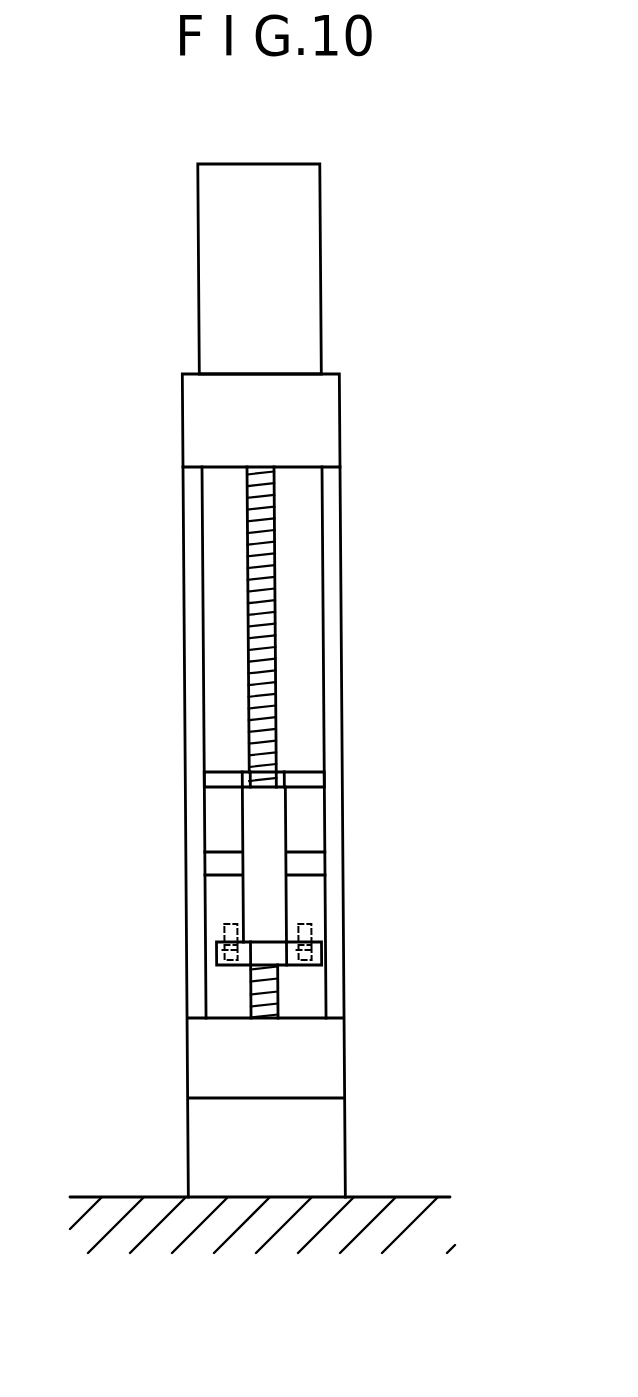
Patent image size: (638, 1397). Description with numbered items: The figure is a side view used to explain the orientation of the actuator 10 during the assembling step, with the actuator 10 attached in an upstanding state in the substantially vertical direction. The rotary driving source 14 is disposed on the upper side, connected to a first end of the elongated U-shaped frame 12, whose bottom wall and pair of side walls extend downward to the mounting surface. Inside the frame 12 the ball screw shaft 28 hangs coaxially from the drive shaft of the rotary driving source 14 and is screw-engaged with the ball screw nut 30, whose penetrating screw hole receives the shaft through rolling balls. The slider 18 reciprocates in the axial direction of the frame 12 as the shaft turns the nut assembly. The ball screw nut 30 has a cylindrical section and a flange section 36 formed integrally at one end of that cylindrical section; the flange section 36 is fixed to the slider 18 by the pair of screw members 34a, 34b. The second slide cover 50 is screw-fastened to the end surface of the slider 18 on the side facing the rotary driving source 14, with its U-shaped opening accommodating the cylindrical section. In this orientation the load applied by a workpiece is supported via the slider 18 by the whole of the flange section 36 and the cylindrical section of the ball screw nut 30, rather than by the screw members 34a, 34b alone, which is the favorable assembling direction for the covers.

The actuator 10 is at (370, 201).
The rotary driving source 14 is at (305, 296).
The frame 12 is at (336, 698).
The slider 18 is at (213, 821).
The ball screw shaft 28 is at (267, 585).
The second slide cover 50 is at (313, 780).
The ball screw nut 30 is at (270, 893).
The flange section 36 is at (317, 950).
The screw member 34a is at (222, 963).
The screw member 34b is at (318, 965).